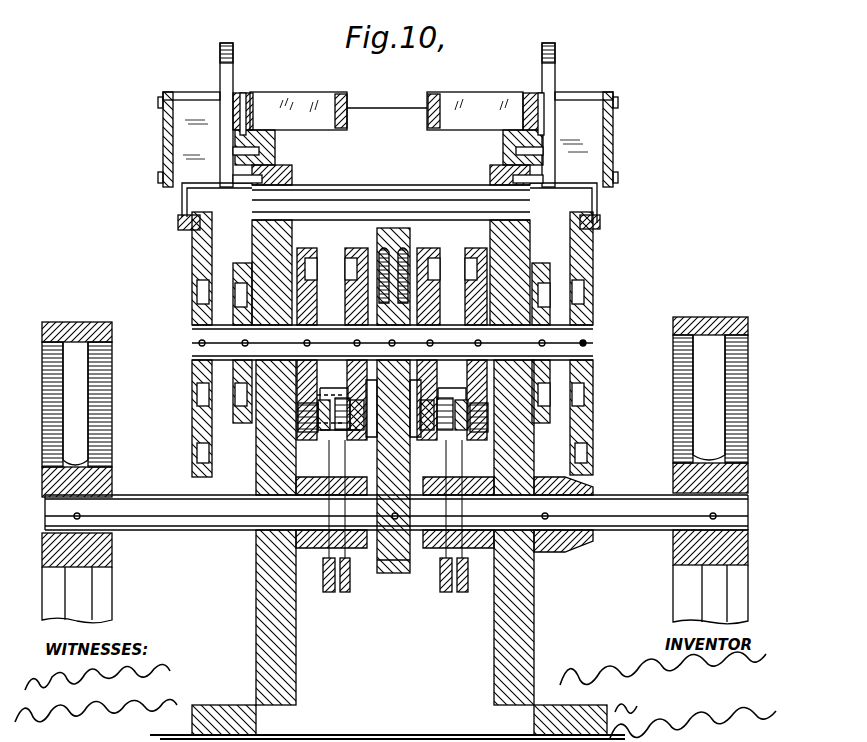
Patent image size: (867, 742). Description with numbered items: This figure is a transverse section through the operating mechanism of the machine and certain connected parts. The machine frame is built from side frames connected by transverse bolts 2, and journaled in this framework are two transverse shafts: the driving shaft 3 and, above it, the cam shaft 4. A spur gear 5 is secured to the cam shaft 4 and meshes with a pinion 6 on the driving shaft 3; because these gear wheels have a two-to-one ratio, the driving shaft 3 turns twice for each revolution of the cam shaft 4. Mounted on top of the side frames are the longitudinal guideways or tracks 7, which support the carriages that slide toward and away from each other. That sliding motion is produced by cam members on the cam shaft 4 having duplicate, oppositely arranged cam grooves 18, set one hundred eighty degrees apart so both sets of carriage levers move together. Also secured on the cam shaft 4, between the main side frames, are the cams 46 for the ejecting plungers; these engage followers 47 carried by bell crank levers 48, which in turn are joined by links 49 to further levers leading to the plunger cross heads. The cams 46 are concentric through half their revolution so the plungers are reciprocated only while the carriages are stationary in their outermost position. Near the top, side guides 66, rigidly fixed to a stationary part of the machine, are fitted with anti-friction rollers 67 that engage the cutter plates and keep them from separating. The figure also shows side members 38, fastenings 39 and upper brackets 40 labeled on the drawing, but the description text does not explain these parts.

The transverse bolts 2 is at (360, 195).
The driving shaft 3 is at (638, 523).
The cam shaft 4 is at (588, 335).
The spur gear 5 is at (387, 232).
The pinion 6 is at (398, 570).
The longitudinal guideways or tracks 7 is at (268, 133).
The cam grooves 18 is at (236, 292).
The side plate 38 is at (188, 237).
The bolt 39 is at (180, 224).
The bracket 40 is at (388, 115).
The cams 46 is at (347, 265).
The followers 47 is at (350, 427).
The bell crank levers 48 is at (472, 440).
The links 49 is at (343, 593).
The side guides 66 is at (283, 102).
The anti-friction rollers 67 is at (424, 108).